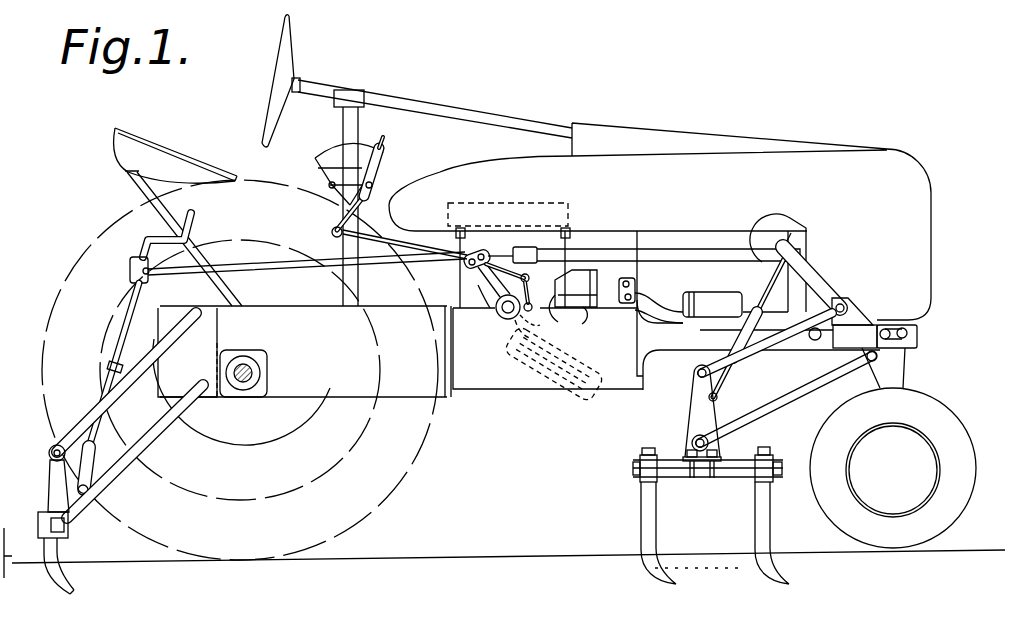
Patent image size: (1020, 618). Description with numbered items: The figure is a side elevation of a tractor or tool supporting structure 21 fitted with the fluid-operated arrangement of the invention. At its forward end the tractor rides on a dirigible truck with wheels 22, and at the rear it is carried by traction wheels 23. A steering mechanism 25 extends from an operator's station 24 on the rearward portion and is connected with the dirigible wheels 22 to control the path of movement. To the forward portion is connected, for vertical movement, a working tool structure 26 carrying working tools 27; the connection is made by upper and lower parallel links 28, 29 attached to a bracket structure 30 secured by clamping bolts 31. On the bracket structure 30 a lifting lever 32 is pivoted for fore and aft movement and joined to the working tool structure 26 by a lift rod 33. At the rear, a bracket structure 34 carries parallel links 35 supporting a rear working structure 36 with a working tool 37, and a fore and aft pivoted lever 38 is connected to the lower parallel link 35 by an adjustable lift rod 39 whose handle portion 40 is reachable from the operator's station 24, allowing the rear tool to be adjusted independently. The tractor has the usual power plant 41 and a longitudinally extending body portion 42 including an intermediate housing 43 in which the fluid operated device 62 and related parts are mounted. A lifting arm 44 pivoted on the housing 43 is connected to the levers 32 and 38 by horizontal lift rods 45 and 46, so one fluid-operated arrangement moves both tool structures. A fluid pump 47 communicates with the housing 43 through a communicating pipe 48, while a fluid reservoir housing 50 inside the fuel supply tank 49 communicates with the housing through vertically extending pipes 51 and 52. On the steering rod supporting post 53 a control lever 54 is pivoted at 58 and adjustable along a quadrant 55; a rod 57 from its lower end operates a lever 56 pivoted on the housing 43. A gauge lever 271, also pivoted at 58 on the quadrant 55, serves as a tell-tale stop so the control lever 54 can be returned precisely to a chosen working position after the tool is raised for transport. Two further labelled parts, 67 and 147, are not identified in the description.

The tractor or tool supporting structure 21 is at (637, 166).
The dirigible wheels 22 is at (955, 427).
The traction wheels 23 is at (388, 483).
The operator's station 24 is at (130, 155).
The steering mechanism 25 is at (313, 85).
The working tool structure 26 is at (698, 418).
The working tools 27 is at (757, 507).
The upper parallel link 28 is at (755, 352).
The lower parallel link 29 is at (773, 406).
The bracket structure 30 is at (850, 324).
The clamping bolts 31 is at (917, 331).
The lifting lever 32 is at (818, 283).
The lift rod 33 is at (779, 238).
The bracket structure 34 is at (212, 343).
The parallel links 35 is at (157, 428).
The rear working structure 36 is at (58, 490).
The working tool 37 is at (50, 552).
The fore and aft pivoted lever 38 is at (168, 292).
The adjustable lift rod 39 is at (122, 335).
The handle portion 40 is at (198, 221).
The power plant 41 is at (690, 232).
The body portion 42 is at (411, 390).
The intermediate housing 43 is at (497, 380).
The lifting arm 44 is at (493, 304).
The horizontal lift rod 45 is at (598, 250).
The horizontal lift rod 46 is at (277, 267).
The fluid pump 47 is at (717, 285).
The communicating pipe 48 is at (660, 278).
The fuel supply tank 49 is at (487, 172).
The fluid reservoir housing 50 is at (516, 208).
The vertically extending pipe 51 is at (459, 267).
The vertically extending pipe 52 is at (580, 227).
The steering rod supporting post 53 is at (364, 108).
The control lever 54 is at (316, 166).
The quadrant 55 is at (332, 148).
The lever 56 is at (530, 246).
The rod 57 is at (418, 248).
The pivot 58 is at (333, 227).
The fluid operated device 62 is at (527, 372).
The bracket 67 is at (625, 298).
The belt guard 147 is at (574, 334).
The gauge lever 271 is at (388, 152).